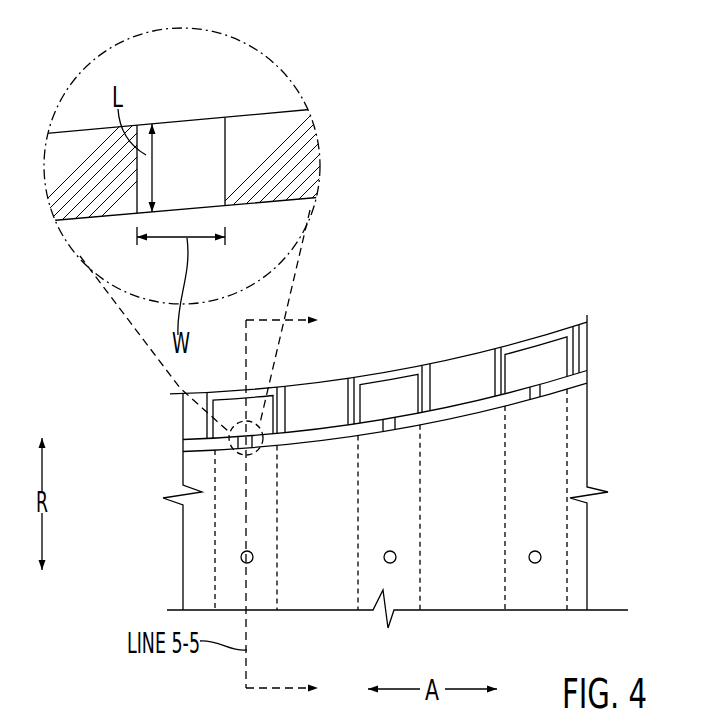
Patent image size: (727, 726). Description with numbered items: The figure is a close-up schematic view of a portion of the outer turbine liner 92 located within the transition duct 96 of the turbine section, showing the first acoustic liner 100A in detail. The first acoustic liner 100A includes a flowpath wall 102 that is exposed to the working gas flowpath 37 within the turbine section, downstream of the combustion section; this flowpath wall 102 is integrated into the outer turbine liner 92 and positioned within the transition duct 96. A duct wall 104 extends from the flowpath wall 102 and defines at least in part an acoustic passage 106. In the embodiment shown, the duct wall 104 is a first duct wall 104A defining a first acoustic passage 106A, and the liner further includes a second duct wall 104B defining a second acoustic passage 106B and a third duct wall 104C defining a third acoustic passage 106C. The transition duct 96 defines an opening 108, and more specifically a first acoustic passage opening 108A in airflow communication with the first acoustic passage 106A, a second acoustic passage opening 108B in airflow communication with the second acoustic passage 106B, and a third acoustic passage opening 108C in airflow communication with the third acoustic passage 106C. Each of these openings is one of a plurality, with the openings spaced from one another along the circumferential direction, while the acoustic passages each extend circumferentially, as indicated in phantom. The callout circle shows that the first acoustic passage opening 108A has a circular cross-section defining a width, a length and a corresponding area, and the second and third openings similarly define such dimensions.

The working gas flowpath 37 is at (480, 562).
The outer turbine liner 92 is at (548, 242).
The transition duct 96 is at (513, 203).
The first acoustic liner 100A is at (505, 312).
The flowpath wall 102 is at (467, 405).
The duct wall 104 is at (378, 346).
The first duct wall 104A is at (291, 383).
The second duct wall 104B is at (398, 372).
The third duct wall 104C is at (545, 338).
The acoustic passage 106 is at (352, 462).
The first acoustic passage 106A is at (218, 413).
The second acoustic passage 106B is at (380, 385).
The third acoustic passage 106C is at (560, 358).
The opening 108 is at (391, 515).
The first acoustic passage opening 108A is at (250, 456).
The second acoustic passage opening 108B is at (393, 440).
The third acoustic passage opening 108C is at (538, 535).